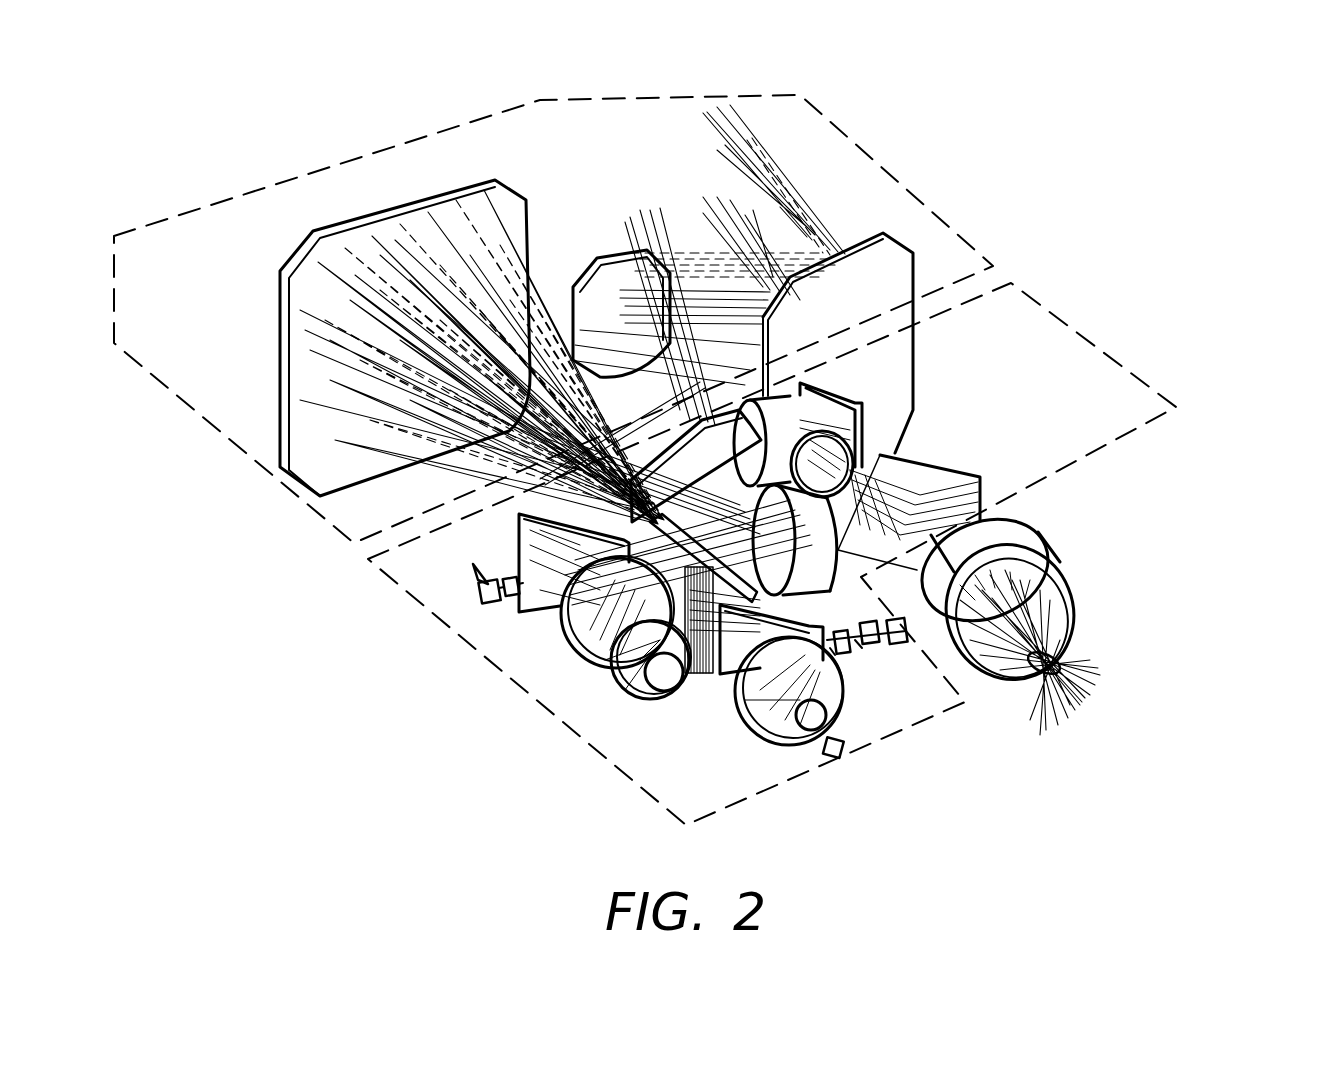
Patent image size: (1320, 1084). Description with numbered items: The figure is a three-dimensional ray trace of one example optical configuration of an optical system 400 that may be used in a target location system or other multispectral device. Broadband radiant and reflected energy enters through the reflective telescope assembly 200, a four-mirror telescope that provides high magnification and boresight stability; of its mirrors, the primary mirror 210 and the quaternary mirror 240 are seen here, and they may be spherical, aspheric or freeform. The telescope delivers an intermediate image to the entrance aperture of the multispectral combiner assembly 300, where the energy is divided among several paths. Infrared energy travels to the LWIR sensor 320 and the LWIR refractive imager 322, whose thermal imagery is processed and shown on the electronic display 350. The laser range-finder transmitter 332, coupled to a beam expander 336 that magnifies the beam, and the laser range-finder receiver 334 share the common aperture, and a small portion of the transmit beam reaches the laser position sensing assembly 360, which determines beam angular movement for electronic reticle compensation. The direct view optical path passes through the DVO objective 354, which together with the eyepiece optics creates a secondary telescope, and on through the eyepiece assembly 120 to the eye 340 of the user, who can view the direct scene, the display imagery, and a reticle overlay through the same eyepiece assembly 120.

The eyepiece assembly 120 is at (1048, 572).
The reflective telescope assembly 200 is at (299, 178).
The primary mirror 210 is at (887, 242).
The quaternary mirror 240 is at (280, 295).
The multispectral combiner assembly 300 is at (1046, 313).
The LWIR (thermal) sensor 320 is at (585, 658).
The LWIR refractive imager 322 is at (622, 692).
The laser range-finder transmitter 332 is at (905, 642).
The laser range-finder receiver 334 is at (840, 750).
The beam expander 336 is at (882, 645).
The eye 340 is at (1125, 728).
The electronic display 350 is at (890, 458).
The DVO objective 354 is at (932, 476).
The laser position sensing assembly 360 is at (480, 602).
The optical system 400 is at (1160, 141).